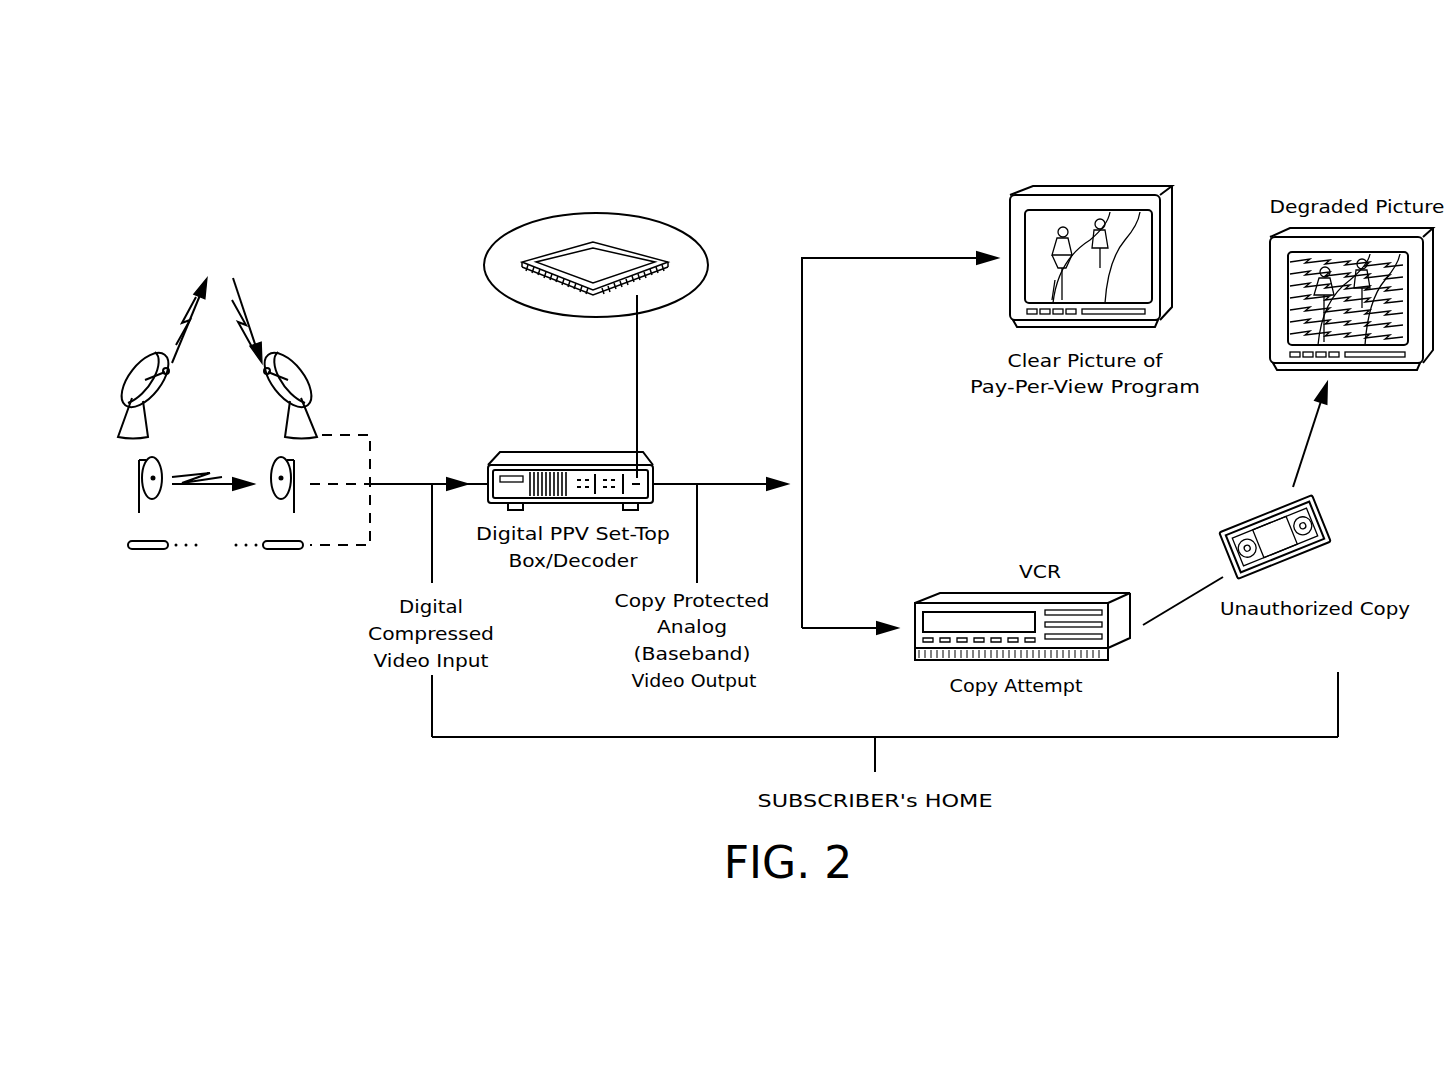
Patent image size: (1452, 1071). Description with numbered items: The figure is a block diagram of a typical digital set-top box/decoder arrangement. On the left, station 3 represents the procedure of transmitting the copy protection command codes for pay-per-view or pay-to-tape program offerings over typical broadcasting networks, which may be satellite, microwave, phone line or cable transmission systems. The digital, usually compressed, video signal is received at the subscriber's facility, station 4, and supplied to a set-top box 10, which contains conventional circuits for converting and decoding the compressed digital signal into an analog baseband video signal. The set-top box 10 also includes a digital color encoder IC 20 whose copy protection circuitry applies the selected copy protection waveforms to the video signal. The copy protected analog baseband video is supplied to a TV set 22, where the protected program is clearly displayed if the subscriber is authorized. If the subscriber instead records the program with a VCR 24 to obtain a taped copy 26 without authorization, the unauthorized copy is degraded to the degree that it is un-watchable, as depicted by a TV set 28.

The station 3 is at (241, 484).
The station 4 is at (602, 288).
The set-top box 10 is at (497, 462).
The digital color encoder IC 20 is at (695, 241).
The TV set 22 is at (1010, 220).
The VCR 24 is at (932, 594).
The taped copy 26 is at (1248, 521).
The TV set 28 is at (1270, 262).